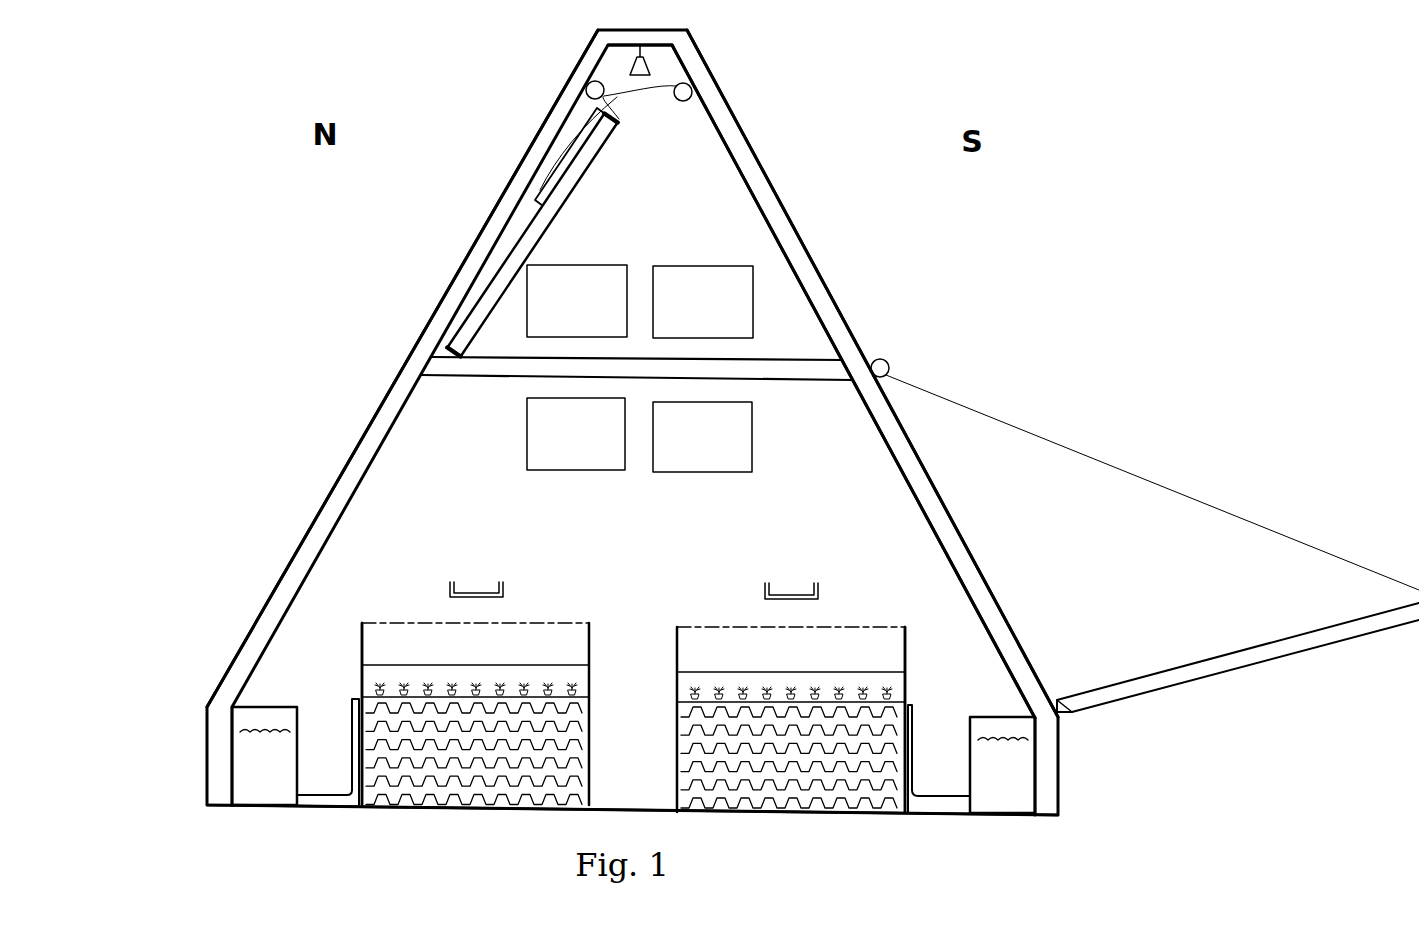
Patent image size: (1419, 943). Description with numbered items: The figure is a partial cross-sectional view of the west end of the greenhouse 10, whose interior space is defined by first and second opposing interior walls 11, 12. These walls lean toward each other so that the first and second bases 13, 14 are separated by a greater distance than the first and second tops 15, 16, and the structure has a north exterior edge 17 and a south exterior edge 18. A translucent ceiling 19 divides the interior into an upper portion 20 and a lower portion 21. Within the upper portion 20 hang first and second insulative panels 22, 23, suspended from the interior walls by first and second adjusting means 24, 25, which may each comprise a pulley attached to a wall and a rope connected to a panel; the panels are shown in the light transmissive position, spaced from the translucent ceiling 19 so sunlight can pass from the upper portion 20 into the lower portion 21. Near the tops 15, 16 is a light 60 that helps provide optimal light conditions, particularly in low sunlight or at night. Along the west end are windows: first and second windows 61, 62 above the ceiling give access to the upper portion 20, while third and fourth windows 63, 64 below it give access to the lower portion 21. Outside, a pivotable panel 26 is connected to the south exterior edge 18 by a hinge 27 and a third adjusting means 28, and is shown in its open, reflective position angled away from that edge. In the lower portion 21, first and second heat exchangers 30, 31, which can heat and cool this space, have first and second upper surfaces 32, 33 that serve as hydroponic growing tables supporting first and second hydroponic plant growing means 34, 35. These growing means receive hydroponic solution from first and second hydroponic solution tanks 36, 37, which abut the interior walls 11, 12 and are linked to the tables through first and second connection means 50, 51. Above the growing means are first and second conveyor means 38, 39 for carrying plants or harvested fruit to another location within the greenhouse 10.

The greenhouse 10 is at (845, 170).
The first interior wall 11 is at (469, 290).
The second interior wall 12 is at (786, 238).
The first base 13 is at (230, 753).
The second base 14 is at (1036, 777).
The first top 15 is at (592, 75).
The second top 16 is at (690, 73).
The north exterior edge 17 is at (471, 250).
The south exterior edge 18 is at (828, 291).
The translucent ceiling 19 is at (445, 368).
The upper portion 20 is at (639, 207).
The lower portion 21 is at (642, 515).
The first insulative panel 22 is at (477, 317).
The second insulative panel 23 is at (570, 160).
The first adjusting means 24 is at (583, 91).
The second adjusting means 25 is at (693, 94).
The pivotable panel 26 is at (1313, 648).
The hinge 27 is at (1073, 712).
The third adjusting means 28 is at (891, 365).
The first heat exchanger 30 is at (360, 767).
The second heat exchanger 31 is at (906, 760).
The first upper surface 32 is at (355, 698).
The second upper surface 33 is at (907, 703).
The first hydroponic plant growing means 34 is at (362, 688).
The second hydroponic plant growing means 35 is at (906, 692).
The first hydroponic solution tank 36 is at (258, 776).
The second hydroponic solution tank 37 is at (1005, 814).
The first conveyor means 38 is at (450, 582).
The second conveyor means 39 is at (818, 588).
The first connection means 50 is at (333, 806).
The second connection means 51 is at (940, 815).
The light 60 is at (646, 63).
The first window 61 is at (548, 280).
The second window 62 is at (745, 290).
The third window 63 is at (540, 430).
The fourth window 64 is at (745, 445).